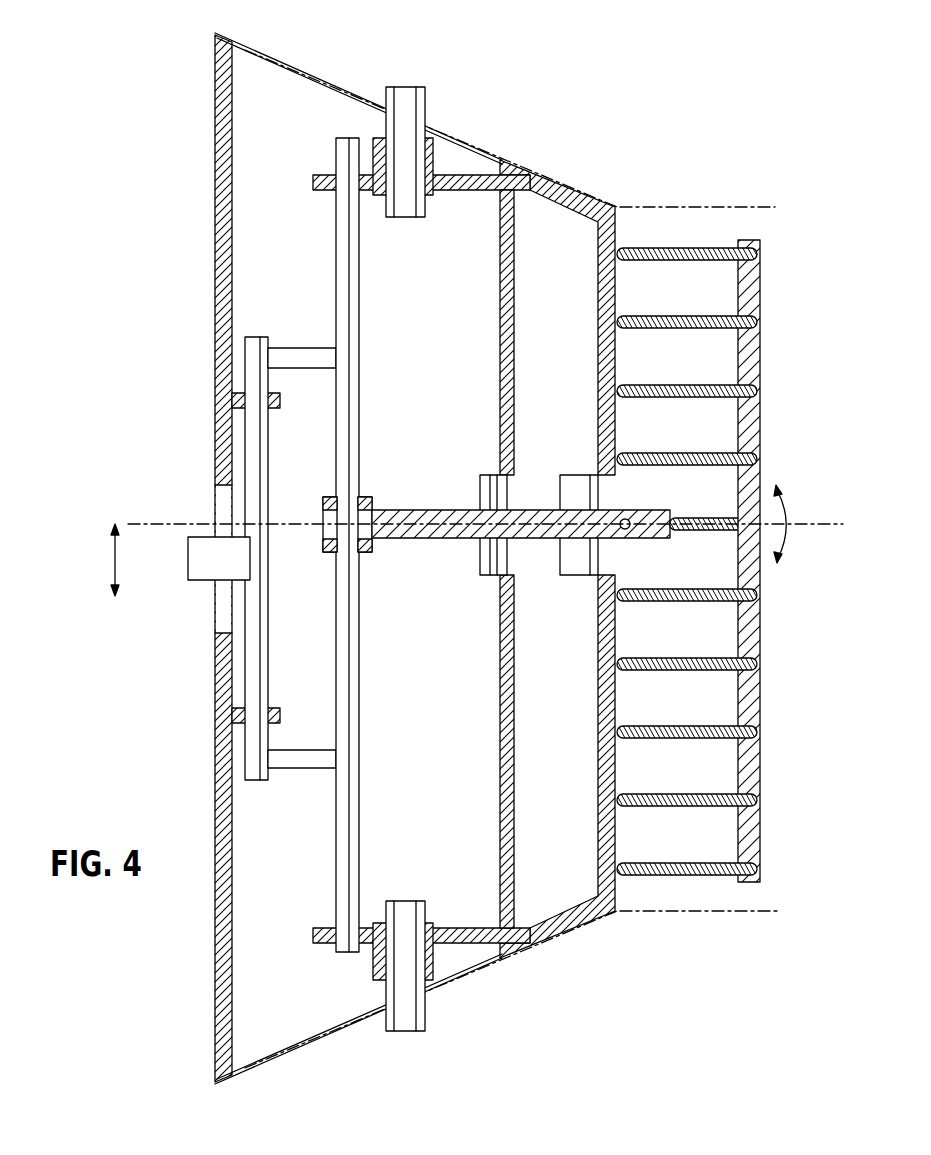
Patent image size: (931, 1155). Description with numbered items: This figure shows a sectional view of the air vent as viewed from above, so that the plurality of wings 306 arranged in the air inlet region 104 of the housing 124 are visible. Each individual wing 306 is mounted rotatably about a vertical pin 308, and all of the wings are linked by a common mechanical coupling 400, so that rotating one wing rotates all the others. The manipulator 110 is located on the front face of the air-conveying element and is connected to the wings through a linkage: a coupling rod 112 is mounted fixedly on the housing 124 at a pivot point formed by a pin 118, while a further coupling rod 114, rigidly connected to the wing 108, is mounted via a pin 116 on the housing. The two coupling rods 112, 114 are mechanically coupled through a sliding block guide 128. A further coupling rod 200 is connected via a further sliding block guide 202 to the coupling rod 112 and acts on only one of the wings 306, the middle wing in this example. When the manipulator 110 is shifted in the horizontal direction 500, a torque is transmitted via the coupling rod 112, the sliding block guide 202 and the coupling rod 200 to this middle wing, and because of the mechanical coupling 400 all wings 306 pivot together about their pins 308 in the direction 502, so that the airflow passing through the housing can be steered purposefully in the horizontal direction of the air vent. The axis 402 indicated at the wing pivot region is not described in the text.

The air inlet opening 104 is at (806, 779).
The wing 108 is at (583, 925).
The manipulator 110 is at (207, 562).
The coupling rod 112 is at (300, 357).
The coupling rod 114 is at (470, 180).
The pin 116 is at (400, 100).
The pin 118 is at (255, 508).
The housing 124 is at (321, 80).
The sliding block guide 128 is at (331, 958).
The coupling rod 200 is at (423, 532).
The sliding block guide 202 is at (381, 502).
The wing 306 is at (708, 250).
The pin 308 is at (683, 250).
The mechanical coupling 400 is at (732, 518).
The rotation axis 402 is at (826, 527).
The horizontal direction 500 is at (112, 558).
The direction 502 is at (786, 513).